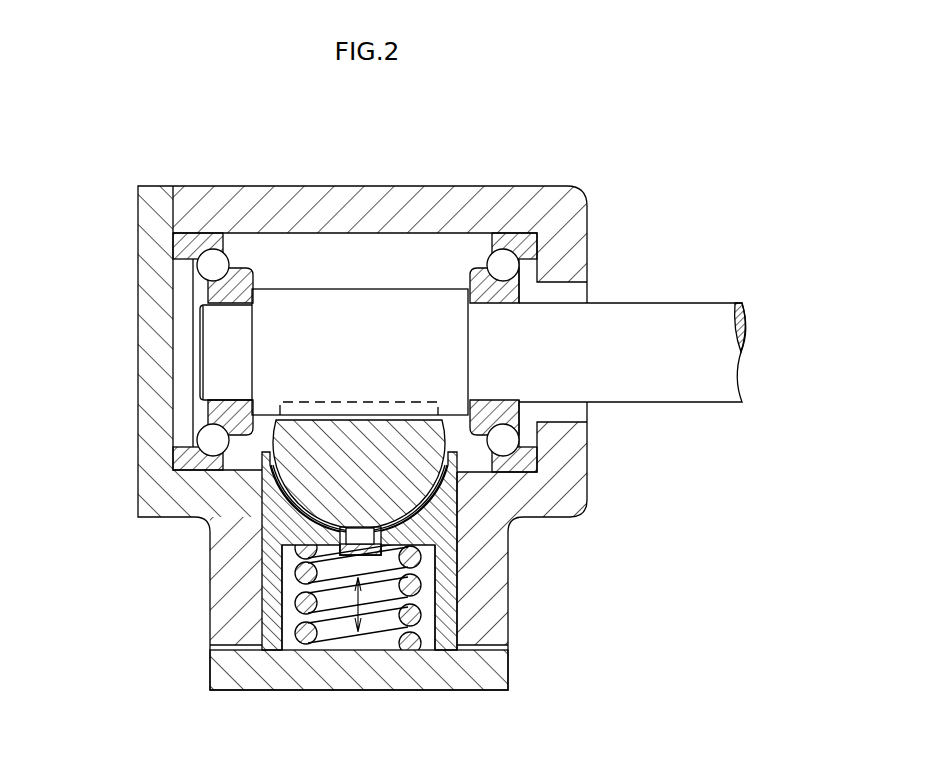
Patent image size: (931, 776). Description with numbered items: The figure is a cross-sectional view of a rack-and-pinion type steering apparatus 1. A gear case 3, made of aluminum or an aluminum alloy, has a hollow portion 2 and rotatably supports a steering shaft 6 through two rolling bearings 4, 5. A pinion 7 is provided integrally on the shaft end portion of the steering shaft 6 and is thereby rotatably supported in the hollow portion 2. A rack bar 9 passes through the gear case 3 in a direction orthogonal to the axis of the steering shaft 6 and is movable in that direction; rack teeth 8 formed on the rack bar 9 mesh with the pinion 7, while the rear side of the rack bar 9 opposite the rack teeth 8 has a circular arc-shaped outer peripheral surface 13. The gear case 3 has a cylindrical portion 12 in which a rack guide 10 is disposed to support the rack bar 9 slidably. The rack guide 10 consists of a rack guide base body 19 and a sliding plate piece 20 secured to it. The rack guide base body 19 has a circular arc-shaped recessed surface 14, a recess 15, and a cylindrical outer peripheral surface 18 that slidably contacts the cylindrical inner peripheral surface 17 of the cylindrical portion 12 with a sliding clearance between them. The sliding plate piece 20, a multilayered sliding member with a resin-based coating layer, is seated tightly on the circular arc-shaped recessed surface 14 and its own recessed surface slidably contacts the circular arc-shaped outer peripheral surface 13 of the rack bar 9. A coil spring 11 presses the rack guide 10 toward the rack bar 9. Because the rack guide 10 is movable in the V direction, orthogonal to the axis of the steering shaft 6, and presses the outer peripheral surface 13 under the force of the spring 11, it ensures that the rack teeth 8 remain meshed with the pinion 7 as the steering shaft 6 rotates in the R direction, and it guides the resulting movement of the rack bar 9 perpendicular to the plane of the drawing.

The rack-and-pinion type steering apparatus 1 is at (598, 181).
The hollow portion 2 is at (377, 236).
The gear case 3 is at (480, 200).
The rolling bearing 4 is at (213, 257).
The rolling bearing 5 is at (506, 250).
The steering shaft 6 is at (633, 345).
The pinion 7 is at (308, 300).
The rack teeth 8 is at (378, 412).
The rack bar 9 is at (385, 487).
The rack guide 10 is at (250, 566).
The spring 11 is at (360, 645).
The cylindrical portion 12 is at (502, 611).
The circular arc-shaped outer peripheral surface 13 is at (302, 516).
The circular arc-shaped recessed surface 14 is at (405, 483).
The recess 15 is at (268, 593).
The cylindrical inner peripheral surface 17 is at (456, 587).
The cylindrical outer peripheral surface 18 is at (452, 606).
The rack guide base body 19 is at (288, 598).
The sliding plate piece 20 is at (380, 522).
The R direction R is at (704, 400).
The V direction V is at (358, 597).